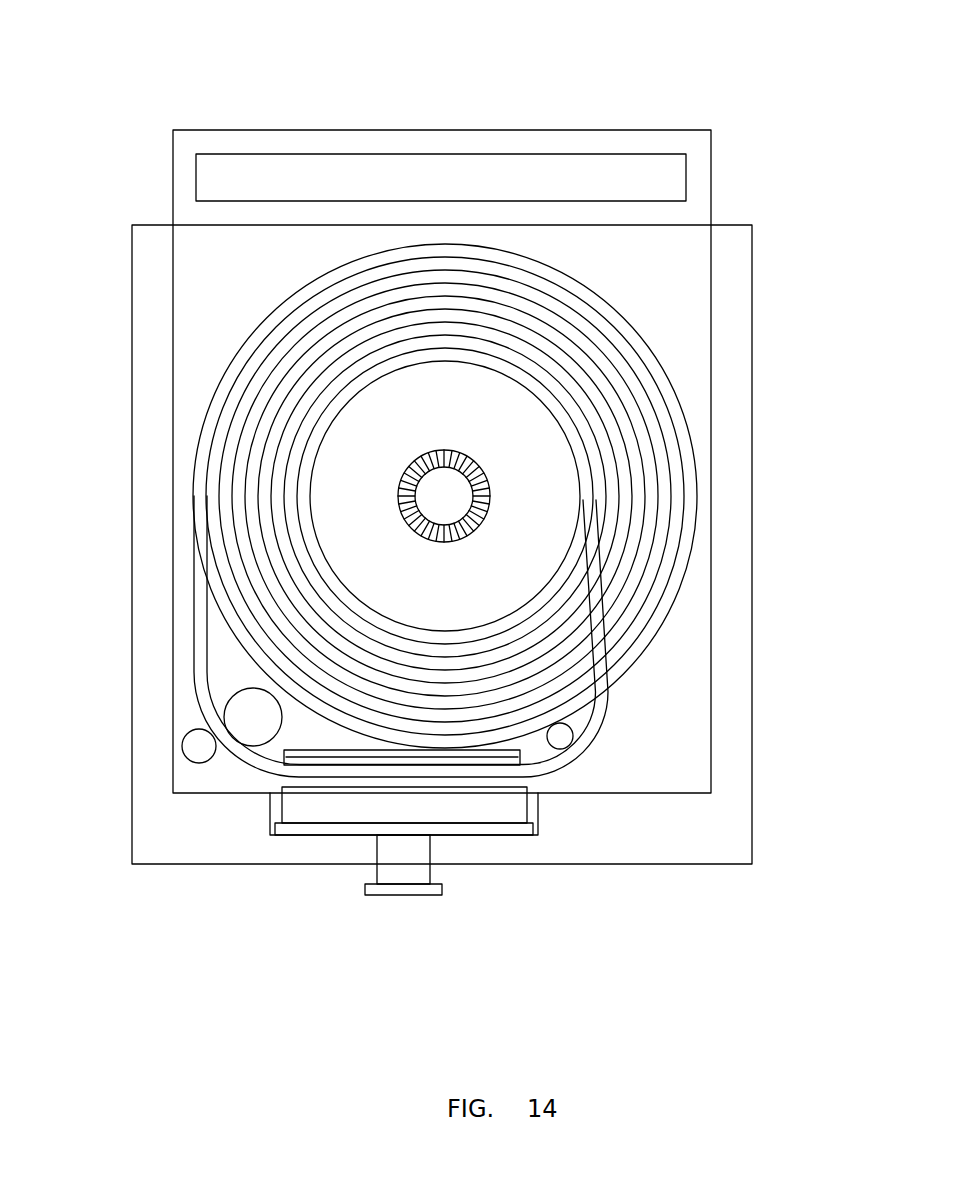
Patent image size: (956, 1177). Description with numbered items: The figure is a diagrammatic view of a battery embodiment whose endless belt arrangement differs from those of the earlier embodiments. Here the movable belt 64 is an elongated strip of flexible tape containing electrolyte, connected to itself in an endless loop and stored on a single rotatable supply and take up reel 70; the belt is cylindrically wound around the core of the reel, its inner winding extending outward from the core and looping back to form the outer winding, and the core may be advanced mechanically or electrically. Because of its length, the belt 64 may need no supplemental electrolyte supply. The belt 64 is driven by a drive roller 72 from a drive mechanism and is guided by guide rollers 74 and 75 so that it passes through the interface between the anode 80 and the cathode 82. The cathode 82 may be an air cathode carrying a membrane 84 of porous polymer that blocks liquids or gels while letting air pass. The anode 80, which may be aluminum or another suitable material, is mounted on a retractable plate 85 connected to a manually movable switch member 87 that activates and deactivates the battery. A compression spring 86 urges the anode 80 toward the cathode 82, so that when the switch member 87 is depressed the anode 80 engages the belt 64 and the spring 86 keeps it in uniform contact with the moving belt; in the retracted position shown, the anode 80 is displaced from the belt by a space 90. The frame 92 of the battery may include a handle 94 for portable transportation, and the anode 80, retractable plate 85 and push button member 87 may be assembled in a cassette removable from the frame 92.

The movable belt 64 is at (628, 335).
The supply and take up reel 70 is at (322, 435).
The drive roller 72 is at (224, 712).
The guide roller 74 is at (182, 746).
The guide roller 75 is at (573, 736).
The anode 80 is at (318, 808).
The cathode 82 is at (285, 760).
The membrane 84 is at (318, 758).
The retractable plate 85 is at (342, 828).
The compression spring 86 is at (407, 852).
The switch member 87 is at (405, 890).
The space 90 is at (530, 784).
The frame 92 is at (740, 527).
The handle 94 is at (467, 148).